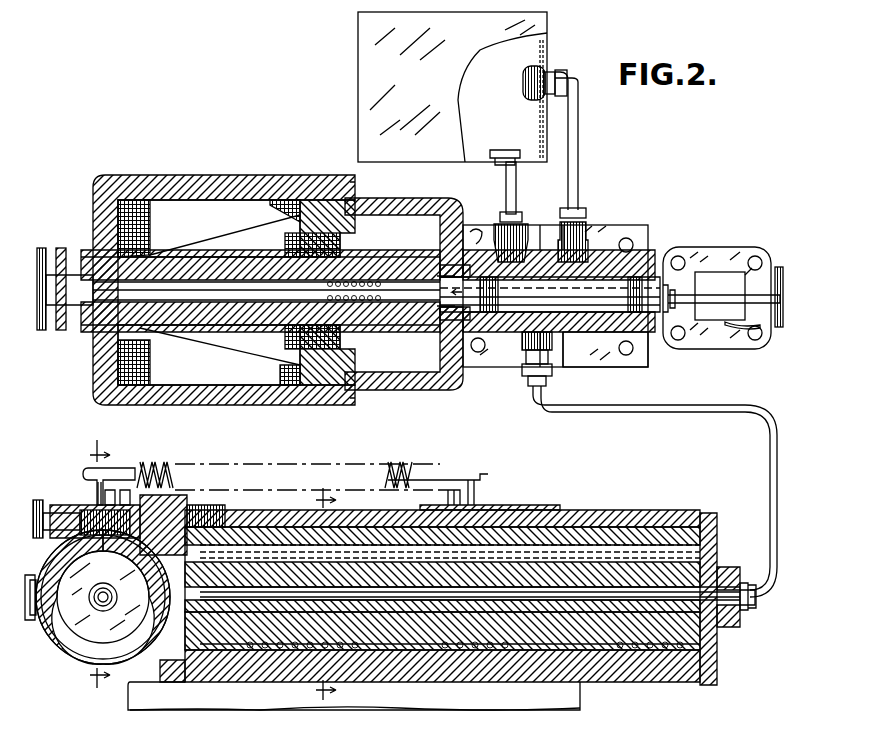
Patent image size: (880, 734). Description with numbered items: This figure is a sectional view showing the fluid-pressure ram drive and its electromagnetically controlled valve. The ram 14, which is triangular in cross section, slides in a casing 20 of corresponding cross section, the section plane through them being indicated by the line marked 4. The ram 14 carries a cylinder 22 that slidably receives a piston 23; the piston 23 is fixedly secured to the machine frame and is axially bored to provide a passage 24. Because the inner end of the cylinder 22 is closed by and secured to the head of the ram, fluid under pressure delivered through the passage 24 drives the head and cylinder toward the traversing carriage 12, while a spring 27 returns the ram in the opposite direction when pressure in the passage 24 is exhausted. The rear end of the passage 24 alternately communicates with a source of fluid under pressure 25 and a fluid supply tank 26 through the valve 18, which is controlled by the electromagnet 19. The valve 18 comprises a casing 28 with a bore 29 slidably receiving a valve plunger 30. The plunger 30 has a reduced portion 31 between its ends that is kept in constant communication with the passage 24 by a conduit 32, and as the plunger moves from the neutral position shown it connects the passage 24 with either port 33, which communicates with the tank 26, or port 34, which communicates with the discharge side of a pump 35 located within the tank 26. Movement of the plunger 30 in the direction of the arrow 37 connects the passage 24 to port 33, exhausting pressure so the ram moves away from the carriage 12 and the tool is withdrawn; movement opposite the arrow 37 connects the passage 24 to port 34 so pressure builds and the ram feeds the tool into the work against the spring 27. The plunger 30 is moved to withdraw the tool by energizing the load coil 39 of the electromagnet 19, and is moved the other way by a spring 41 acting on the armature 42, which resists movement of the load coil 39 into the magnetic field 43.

The section line 4- 4 is at (326, 597).
The traversing carriage 12 is at (99, 567).
The ram 14 is at (72, 655).
The valve 18 is at (590, 290).
The electromagnet 19 is at (282, 178).
The casing 20 is at (618, 682).
The cylinder 22 is at (505, 575).
The piston 23 is at (560, 582).
The passage 24 is at (590, 600).
The source of fluid under pressure 25 is at (506, 186).
The fluid supply tank 26 is at (360, 102).
The spring 27 is at (406, 470).
The casing 28 is at (605, 332).
The bore 29 is at (498, 334).
The valve plunger 30 is at (630, 285).
The reduced portion 31 is at (541, 290).
The conduit 32 is at (632, 412).
The port 33 is at (500, 245).
The port 34 is at (578, 265).
The pump 35 is at (523, 85).
The arrow 37 is at (443, 300).
The load coil 39 is at (340, 245).
The spring 41 is at (385, 276).
The armature 42 is at (393, 318).
The magnetic field 43 is at (215, 200).